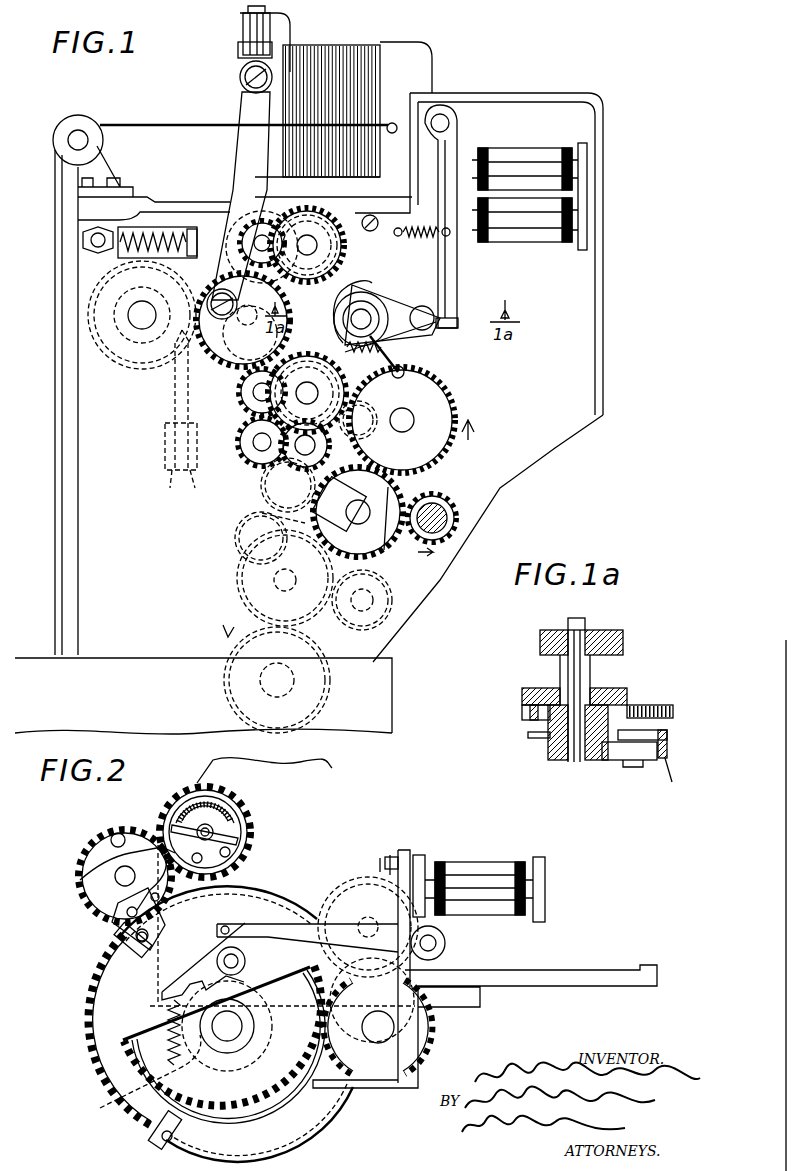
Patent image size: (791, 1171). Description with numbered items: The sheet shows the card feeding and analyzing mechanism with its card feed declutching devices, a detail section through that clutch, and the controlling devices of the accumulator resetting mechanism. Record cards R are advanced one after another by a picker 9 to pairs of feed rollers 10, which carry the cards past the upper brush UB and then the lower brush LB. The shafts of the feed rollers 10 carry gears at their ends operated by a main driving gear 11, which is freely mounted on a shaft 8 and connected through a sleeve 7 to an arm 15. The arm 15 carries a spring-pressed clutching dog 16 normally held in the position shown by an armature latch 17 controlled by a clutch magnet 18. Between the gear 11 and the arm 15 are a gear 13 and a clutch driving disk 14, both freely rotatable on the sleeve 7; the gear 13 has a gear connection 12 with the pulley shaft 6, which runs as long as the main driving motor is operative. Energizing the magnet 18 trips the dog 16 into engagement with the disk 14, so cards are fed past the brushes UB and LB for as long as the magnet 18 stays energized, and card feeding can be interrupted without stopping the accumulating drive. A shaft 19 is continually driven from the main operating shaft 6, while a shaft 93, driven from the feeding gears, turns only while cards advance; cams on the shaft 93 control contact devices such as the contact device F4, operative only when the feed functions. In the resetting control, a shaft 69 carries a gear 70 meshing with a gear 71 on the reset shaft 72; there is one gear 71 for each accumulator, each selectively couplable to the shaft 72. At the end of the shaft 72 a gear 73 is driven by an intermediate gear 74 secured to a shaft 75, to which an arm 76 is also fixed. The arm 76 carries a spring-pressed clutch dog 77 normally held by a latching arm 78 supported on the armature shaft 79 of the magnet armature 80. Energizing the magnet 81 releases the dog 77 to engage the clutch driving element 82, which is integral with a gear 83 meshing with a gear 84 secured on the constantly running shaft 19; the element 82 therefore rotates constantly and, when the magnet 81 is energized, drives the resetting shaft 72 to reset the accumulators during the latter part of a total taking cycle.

In FIG. 1, the pulley shaft 6 is at (442, 516).
In FIG. 1, the sleeve 7 is at (394, 316).
In FIG. 1A, the sleeve 7 is at (579, 762).
In FIG. 1, the shaft 8 is at (374, 311).
In FIG. 1A, the shaft 8 is at (582, 705).
In FIG. 1, the picker 9 is at (287, 62).
In FIG. 1, the record cards R is at (333, 62).
In FIG. 1, the feed rollers 10 is at (290, 205).
In FIG. 1, the main driving gear 11 is at (360, 316).
In FIG. 1A, the main driving gear 11 is at (535, 688).
In FIG. 1, the gear connection 12 is at (433, 493).
In FIG. 1A, the gear connection 12 is at (660, 705).
In FIG. 1, the gear 13 is at (366, 378).
In FIG. 1A, the gear 13 is at (527, 717).
In FIG. 1, the clutch driving disk 14 is at (422, 348).
In FIG. 1A, the clutch driving disk 14 is at (533, 737).
In FIG. 1, the arm 15 is at (410, 292).
In FIG. 1A, the arm 15 is at (615, 760).
In FIG. 1, the clutching dog 16 is at (422, 340).
In FIG. 1A, the clutching dog 16 is at (640, 732).
In FIG. 1, the armature latch 17 is at (452, 310).
In FIG. 1A, the armature latch 17 is at (670, 768).
In FIG. 1, the clutch magnet 18 is at (519, 160).
In FIG. 1, the shaft 19 is at (240, 666).
In FIG. 2, the shaft 19 is at (383, 1037).
In FIG. 1, the shaft 93 is at (138, 322).
In FIG. 1, the contact device F4 is at (183, 343).
In FIG. 1, the upper brush UB is at (243, 320).
In FIG. 1, the lower brush LB is at (273, 490).
In FIG. 2, the shaft 69 is at (232, 836).
In FIG. 2, the gear 70 is at (247, 848).
In FIG. 2, the gear 71 is at (108, 850).
In FIG. 2, the reset shaft 72 is at (117, 878).
In FIG. 2, the gear 73 is at (100, 903).
In FIG. 2, the intermediate gear 74 is at (118, 974).
In FIG. 2, the shaft 75 is at (236, 1031).
In FIG. 2, the arm 76 is at (128, 1098).
In FIG. 2, the clutch dog 77 is at (192, 972).
In FIG. 2, the latching arm 78 is at (347, 928).
In FIG. 2, the armature shaft 79 is at (437, 943).
In FIG. 2, the magnet armature 80 is at (420, 858).
In FIG. 2, the magnet 81 is at (480, 872).
In FIG. 2, the clutch driving element 82 is at (243, 1068).
In FIG. 2, the gear 83 is at (258, 1100).
In FIG. 2, the gear 84 is at (432, 1044).